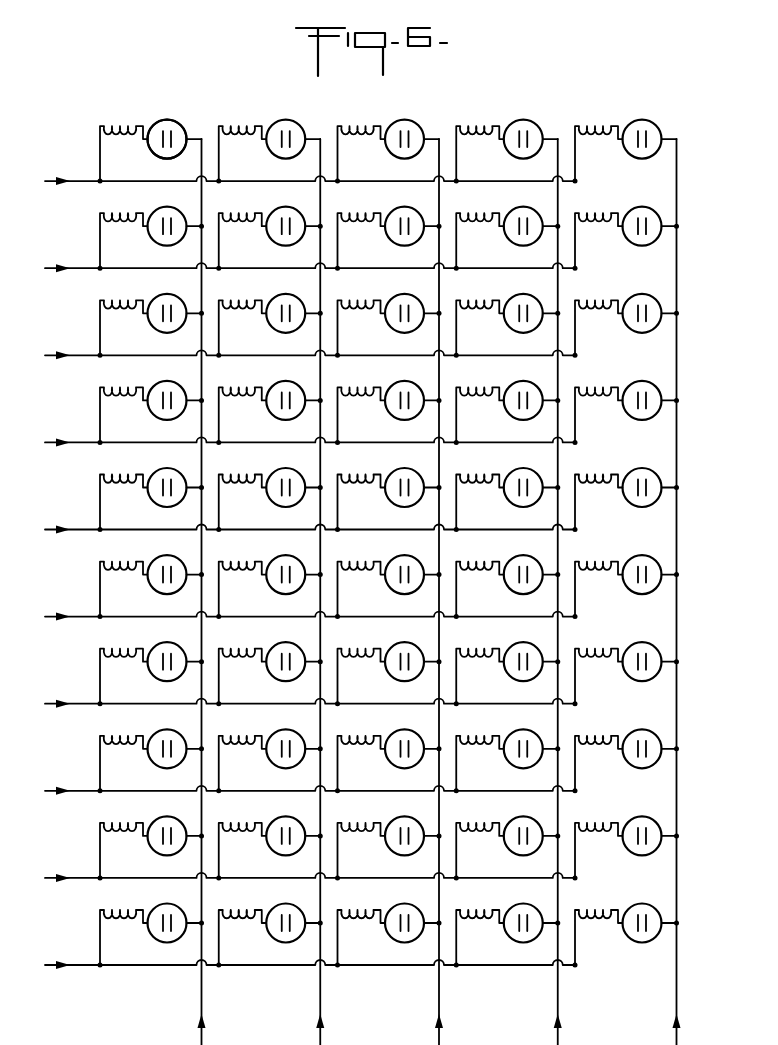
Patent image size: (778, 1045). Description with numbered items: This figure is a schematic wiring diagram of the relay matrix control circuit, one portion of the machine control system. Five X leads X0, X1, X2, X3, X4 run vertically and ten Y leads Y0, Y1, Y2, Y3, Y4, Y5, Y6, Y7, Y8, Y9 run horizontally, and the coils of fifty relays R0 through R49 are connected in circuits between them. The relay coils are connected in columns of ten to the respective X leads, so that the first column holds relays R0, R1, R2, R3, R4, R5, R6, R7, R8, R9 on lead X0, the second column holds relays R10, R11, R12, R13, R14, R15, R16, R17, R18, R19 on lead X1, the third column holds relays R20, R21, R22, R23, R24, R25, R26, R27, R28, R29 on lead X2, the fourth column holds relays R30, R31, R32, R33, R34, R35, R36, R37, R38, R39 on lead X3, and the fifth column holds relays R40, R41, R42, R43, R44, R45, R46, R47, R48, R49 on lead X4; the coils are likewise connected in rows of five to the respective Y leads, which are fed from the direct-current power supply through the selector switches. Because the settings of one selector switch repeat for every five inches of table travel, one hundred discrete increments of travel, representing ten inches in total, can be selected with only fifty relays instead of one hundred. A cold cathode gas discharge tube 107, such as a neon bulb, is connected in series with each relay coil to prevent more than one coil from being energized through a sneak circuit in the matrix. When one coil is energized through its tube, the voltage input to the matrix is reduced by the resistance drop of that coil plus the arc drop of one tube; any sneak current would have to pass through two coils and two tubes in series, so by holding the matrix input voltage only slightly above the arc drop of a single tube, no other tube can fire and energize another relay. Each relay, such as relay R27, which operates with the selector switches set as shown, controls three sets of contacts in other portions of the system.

The cold cathode gas discharge tube 107 is at (168, 128).
The relay R0 is at (151, 927).
The relay R1 is at (151, 840).
The relay R2 is at (151, 753).
The relay R3 is at (151, 666).
The relay R4 is at (151, 579).
The relay R5 is at (151, 492).
The relay R6 is at (151, 404).
The relay R7 is at (151, 317).
The relay R8 is at (151, 230).
The relay R9 is at (150, 143).
The relay R10 is at (269, 927).
The relay R11 is at (269, 840).
The relay R12 is at (269, 753).
The relay R13 is at (269, 666).
The relay R14 is at (269, 579).
The relay R15 is at (269, 492).
The relay R16 is at (269, 404).
The relay R17 is at (269, 317).
The relay R18 is at (269, 230).
The relay R19 is at (268, 143).
The relay R20 is at (388, 927).
The relay R21 is at (388, 840).
The relay R22 is at (388, 753).
The relay R23 is at (388, 666).
The relay R24 is at (388, 579).
The relay R25 is at (388, 492).
The relay R26 is at (388, 404).
The relay R27 is at (388, 317).
The relay R28 is at (388, 230).
The relay R29 is at (387, 143).
The relay R30 is at (507, 927).
The relay R31 is at (507, 840).
The relay R32 is at (507, 753).
The relay R33 is at (507, 666).
The relay R34 is at (507, 579).
The relay R35 is at (507, 492).
The relay R36 is at (507, 404).
The relay R37 is at (507, 317).
The relay R38 is at (507, 230).
The relay R39 is at (506, 143).
The relay R40 is at (626, 927).
The relay R41 is at (626, 840).
The relay R42 is at (626, 753).
The relay R43 is at (626, 666).
The relay R44 is at (626, 579).
The relay R45 is at (626, 492).
The relay R46 is at (626, 404).
The relay R47 is at (626, 317).
The relay R48 is at (626, 230).
The relay R49 is at (625, 143).
The Y lead Y0 is at (310, 955).
The Y lead Y1 is at (310, 868).
The Y lead Y2 is at (310, 781).
The Y lead Y3 is at (310, 694).
The Y lead Y4 is at (310, 607).
The Y lead Y5 is at (310, 520).
The Y lead Y6 is at (310, 433).
The Y lead Y7 is at (310, 346).
The Y lead Y8 is at (310, 259).
The Y lead Y9 is at (310, 172).
The X lead X0 is at (186, 592).
The X lead X1 is at (304, 592).
The X lead X2 is at (423, 592).
The X lead X3 is at (542, 592).
The X lead X4 is at (661, 592).